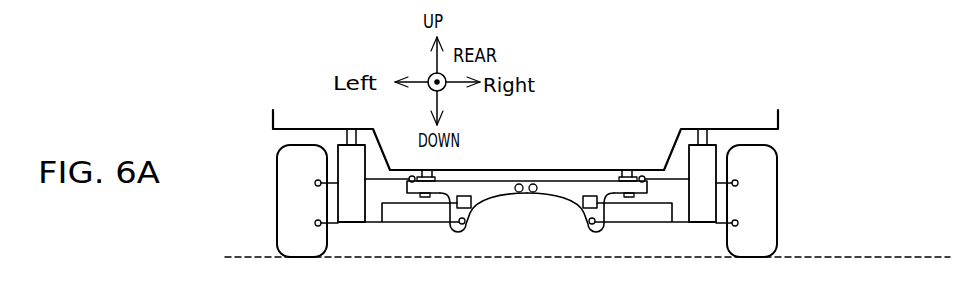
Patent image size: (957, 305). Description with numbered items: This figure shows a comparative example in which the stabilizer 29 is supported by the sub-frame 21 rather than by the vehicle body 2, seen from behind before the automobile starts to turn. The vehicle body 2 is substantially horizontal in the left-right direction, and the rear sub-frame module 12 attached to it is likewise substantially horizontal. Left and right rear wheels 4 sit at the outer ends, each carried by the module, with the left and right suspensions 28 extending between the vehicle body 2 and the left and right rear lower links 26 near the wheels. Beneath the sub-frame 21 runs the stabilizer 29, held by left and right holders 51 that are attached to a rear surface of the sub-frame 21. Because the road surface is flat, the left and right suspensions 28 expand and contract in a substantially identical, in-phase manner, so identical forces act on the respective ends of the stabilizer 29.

The vehicle body 2 is at (272, 120).
The rear wheel 4 is at (287, 195).
The rear sub-frame module 12 is at (526, 176).
The sub-frame 21 is at (505, 192).
The rear lower link 26 is at (373, 222).
The suspension 28 is at (347, 163).
The stabilizer 29 is at (553, 202).
The holder 51 is at (467, 209).